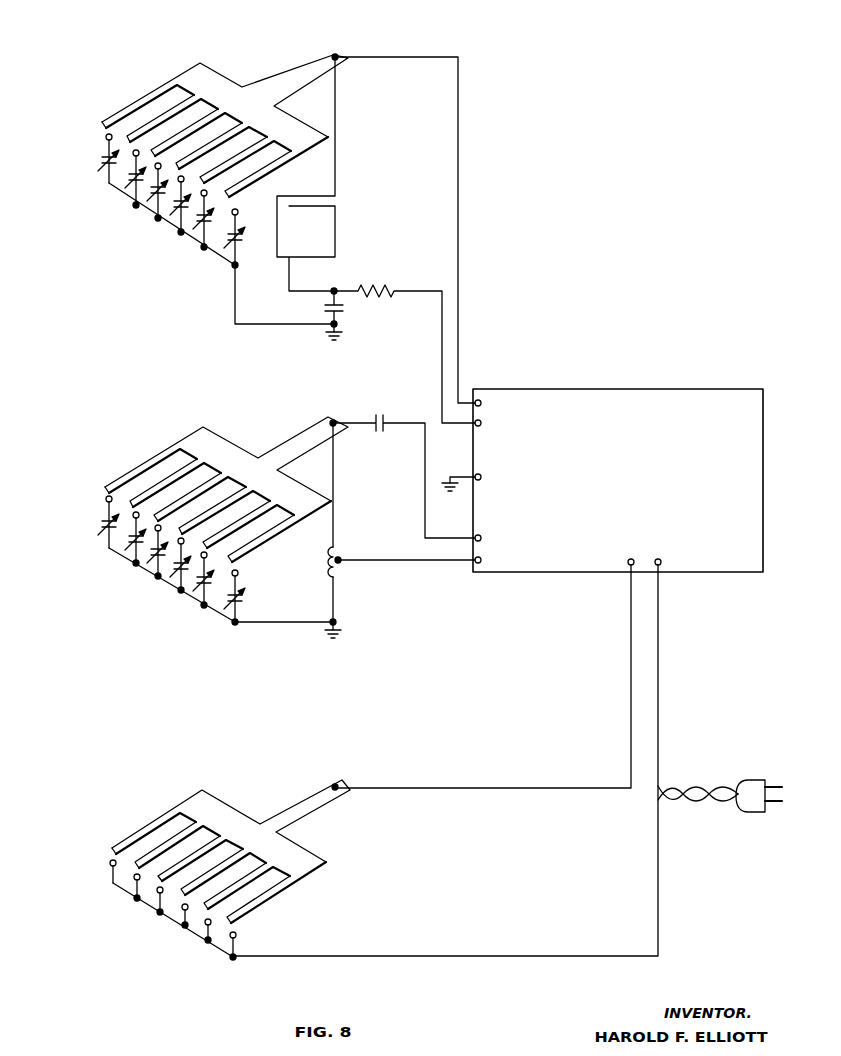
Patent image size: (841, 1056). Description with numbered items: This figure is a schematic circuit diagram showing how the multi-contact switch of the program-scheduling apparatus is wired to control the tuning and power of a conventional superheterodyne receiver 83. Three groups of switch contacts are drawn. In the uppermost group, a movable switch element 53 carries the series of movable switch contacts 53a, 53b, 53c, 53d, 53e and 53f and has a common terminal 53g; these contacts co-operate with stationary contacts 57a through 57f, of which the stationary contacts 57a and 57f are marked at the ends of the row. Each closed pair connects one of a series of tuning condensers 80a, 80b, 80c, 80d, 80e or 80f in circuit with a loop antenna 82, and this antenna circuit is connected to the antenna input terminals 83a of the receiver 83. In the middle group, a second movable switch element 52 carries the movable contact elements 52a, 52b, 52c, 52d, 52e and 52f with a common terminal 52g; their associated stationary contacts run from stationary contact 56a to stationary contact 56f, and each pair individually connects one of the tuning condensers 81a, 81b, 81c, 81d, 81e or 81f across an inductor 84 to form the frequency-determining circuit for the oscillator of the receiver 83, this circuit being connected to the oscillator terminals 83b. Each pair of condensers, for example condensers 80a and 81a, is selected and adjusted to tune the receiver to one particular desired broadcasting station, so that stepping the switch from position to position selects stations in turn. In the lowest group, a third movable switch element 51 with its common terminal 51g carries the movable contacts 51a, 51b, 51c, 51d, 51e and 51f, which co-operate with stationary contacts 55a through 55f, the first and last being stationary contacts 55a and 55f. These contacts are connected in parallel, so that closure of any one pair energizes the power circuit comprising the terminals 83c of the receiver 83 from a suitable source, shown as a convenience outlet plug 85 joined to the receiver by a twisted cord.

The power switch comb plate 51 is at (303, 857).
The movable contact 51a is at (115, 848).
The movable contact 51b is at (135, 863).
The movable contact 51c is at (155, 876).
The movable contact 51d is at (178, 892).
The movable contact 51e is at (203, 905).
The movable contact 51f is at (253, 913).
The comb stem terminal 51g is at (316, 797).
The oscillator tuning comb plate 52 is at (255, 458).
The movable contact element 52a is at (152, 462).
The movable contact element 52b is at (173, 470).
The movable contact element 52c is at (203, 480).
The movable contact element 52d is at (247, 500).
The movable contact element 52e is at (303, 520).
The movable contact element 52f is at (279, 531).
The comb stem terminal 52g is at (333, 423).
The antenna tuning comb plate 53 is at (245, 93).
The movable switch contact 53a is at (135, 108).
The movable switch contact 53b is at (173, 105).
The movable switch contact 53c is at (210, 117).
The movable switch contact 53d is at (227, 130).
The movable switch contact 53e is at (267, 150).
The movable switch contact 53f is at (275, 172).
The comb stem terminal 53g is at (333, 55).
The stationary contact 55a is at (110, 863).
The stationary contact 55f is at (236, 935).
The stationary contact 56a is at (106, 500).
The stationary contact 56f is at (239, 573).
The stationary contact 57a is at (106, 137).
The stationary contact 57f is at (238, 212).
The tuning condenser 80a is at (104, 163).
The tuning condenser 80b is at (130, 179).
The tuning condenser 80c is at (154, 192).
The tuning condenser 80d is at (177, 210).
The tuning condenser 80e is at (201, 224).
The tuning condenser 80f is at (243, 240).
The tuning condenser 81a is at (101, 525).
The tuning condenser 81b is at (118, 539).
The tuning condenser 81c is at (143, 557).
The tuning condenser 81d is at (170, 578).
The tuning condenser 81e is at (195, 595).
The tuning condenser 81f is at (222, 603).
The loop antenna 82 is at (330, 220).
The superheterodyne receiver 83 is at (608, 390).
The antenna input terminals 83a is at (479, 401).
The oscillator circuit terminals 83b is at (476, 540).
The power circuit terminals 83c is at (657, 565).
The inductor 84 is at (340, 566).
The convenience outlet plug 85 is at (748, 783).